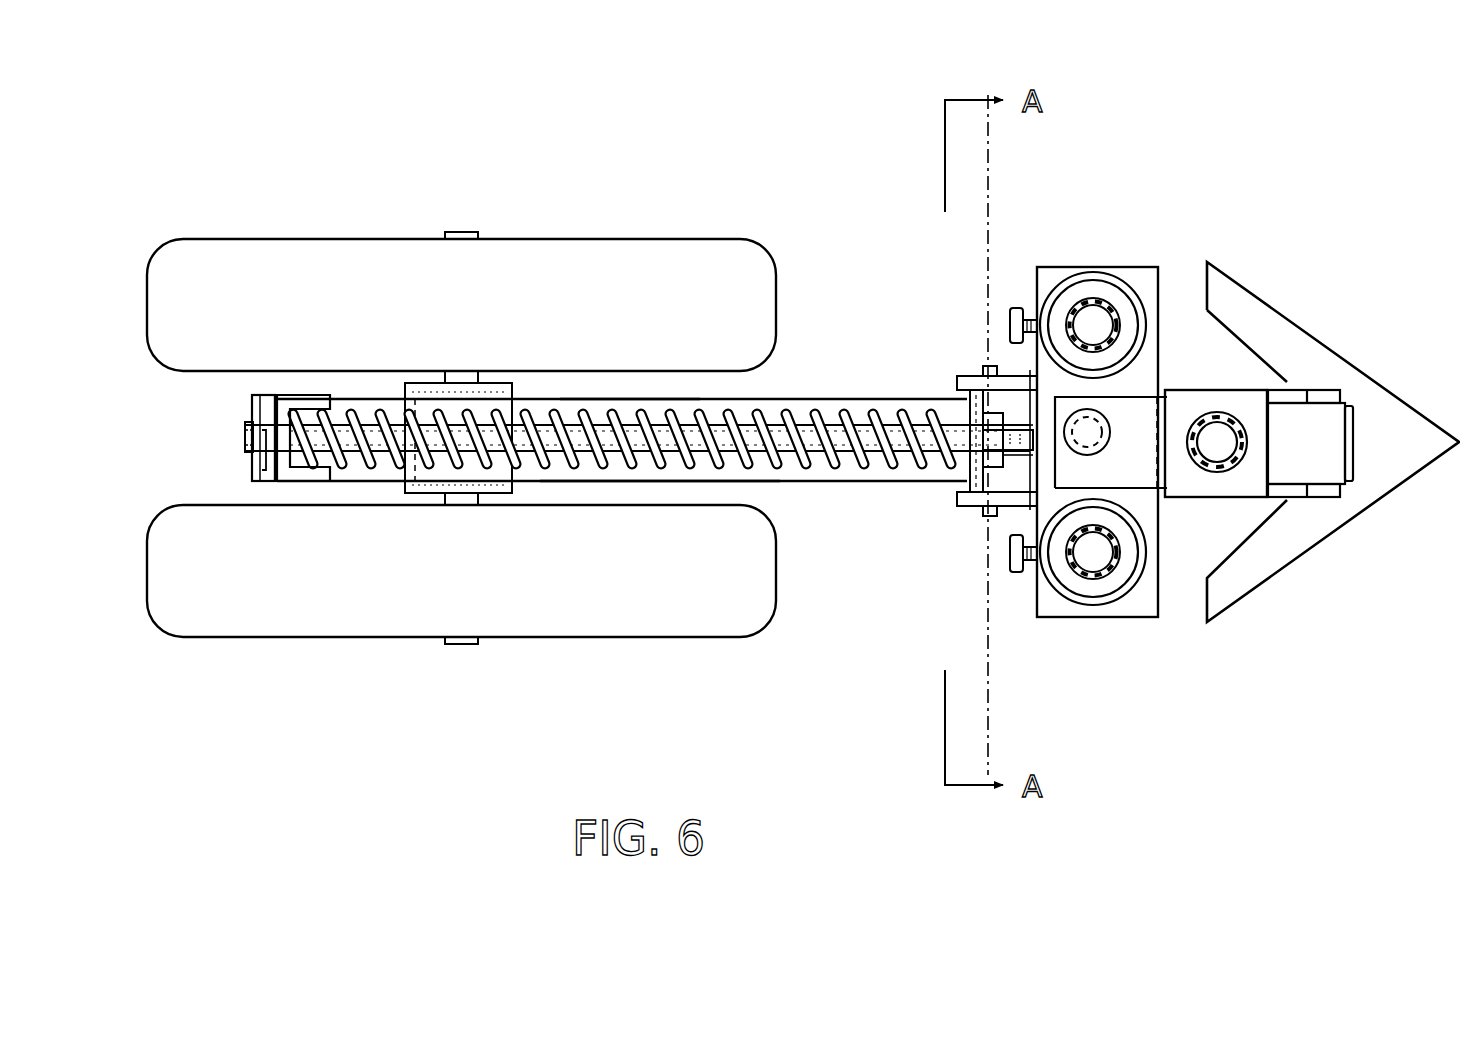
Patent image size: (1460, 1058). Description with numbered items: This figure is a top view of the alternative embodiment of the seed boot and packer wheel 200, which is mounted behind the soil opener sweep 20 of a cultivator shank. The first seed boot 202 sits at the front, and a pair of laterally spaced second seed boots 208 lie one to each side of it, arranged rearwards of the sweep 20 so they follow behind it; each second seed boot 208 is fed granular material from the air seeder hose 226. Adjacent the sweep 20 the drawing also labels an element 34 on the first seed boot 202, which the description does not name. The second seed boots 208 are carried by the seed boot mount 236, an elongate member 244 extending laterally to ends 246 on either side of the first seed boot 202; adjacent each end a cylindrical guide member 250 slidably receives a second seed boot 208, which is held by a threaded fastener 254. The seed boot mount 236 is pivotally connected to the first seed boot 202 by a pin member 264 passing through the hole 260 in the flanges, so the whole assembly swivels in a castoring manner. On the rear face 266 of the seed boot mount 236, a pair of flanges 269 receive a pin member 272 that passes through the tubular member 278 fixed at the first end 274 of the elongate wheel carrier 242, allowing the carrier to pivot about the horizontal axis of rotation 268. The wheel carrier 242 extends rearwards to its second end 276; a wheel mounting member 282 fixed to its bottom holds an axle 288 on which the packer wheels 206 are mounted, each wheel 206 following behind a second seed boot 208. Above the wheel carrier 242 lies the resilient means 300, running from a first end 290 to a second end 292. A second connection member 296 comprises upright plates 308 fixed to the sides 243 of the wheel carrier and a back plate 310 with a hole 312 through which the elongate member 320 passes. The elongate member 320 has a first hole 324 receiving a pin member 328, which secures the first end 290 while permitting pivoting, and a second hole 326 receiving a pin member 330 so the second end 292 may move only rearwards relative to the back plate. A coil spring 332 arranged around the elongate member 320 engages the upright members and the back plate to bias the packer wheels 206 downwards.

The soil opener sweep 20 is at (1366, 358).
The ball socket bracket 34 is at (1238, 422).
The seed boot and packer wheel 200 is at (775, 188).
The first seed boot 202 is at (1250, 500).
The packer wheels 206 is at (315, 232).
The second seed boots 208 is at (1078, 266).
The air seeder hose 226 is at (1117, 312).
The seed boot mount 236 is at (1110, 265).
The wheel carrier 242 is at (775, 484).
The sides of the wheel carrying member 243 is at (628, 398).
The elongate member 244 is at (1160, 603).
The ends of the seed boot mount 246 is at (1060, 278).
The cylindrical guide member 250 is at (1160, 290).
The threaded fastener 254 is at (1013, 308).
The hole 260 is at (1090, 432).
The pin member 264 is at (1162, 500).
The rear face of the seed boot mount 266 is at (1032, 585).
The axis of rotation 268 is at (983, 630).
The flanges 269 is at (962, 410).
The pin member 272 is at (987, 372).
The first end of the wheel carrier 274 is at (958, 422).
The second end of the wheel carrier 276 is at (254, 404).
The tubular member 278 is at (976, 390).
The wheel mounting member 282 is at (496, 500).
The axle 288 is at (463, 232).
The first end of the biasing means 290 is at (1000, 470).
The second end of the biasing means 292 is at (248, 454).
The second connection member 296 is at (331, 484).
The resilient means 300 is at (768, 396).
The upright plates 308 is at (318, 398).
The back plate 310 is at (262, 484).
The hole 312 is at (272, 395).
The elongate member 320 is at (742, 418).
The first hole 324 is at (946, 485).
The second hole 326 is at (245, 438).
The pin member 328 is at (986, 470).
The pin member 330 is at (248, 425).
The coil spring 332 is at (727, 483).